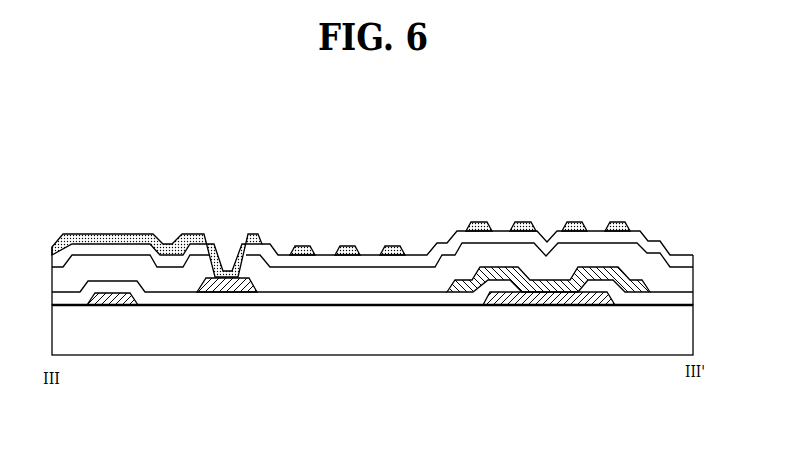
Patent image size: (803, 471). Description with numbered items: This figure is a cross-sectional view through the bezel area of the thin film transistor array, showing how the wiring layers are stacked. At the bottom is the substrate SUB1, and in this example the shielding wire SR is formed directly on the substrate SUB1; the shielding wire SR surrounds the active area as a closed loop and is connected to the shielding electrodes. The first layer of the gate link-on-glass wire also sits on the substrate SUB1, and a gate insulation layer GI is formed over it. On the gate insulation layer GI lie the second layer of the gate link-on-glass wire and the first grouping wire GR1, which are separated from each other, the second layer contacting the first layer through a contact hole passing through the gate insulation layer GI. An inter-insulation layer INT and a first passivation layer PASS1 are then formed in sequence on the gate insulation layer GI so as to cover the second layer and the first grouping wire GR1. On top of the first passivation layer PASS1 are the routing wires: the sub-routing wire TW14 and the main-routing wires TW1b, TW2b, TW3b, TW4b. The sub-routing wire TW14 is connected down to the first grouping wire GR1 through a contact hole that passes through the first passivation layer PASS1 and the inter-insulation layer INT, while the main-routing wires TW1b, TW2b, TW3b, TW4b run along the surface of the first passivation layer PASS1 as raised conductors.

The substrate SUB1 is at (445, 340).
The gate insulation layer GI is at (305, 300).
The shielding wire SR is at (112, 305).
The first grouping wire GR1 is at (227, 297).
The inter-insulation layer INT is at (376, 282).
The first passivation layer PASS1 is at (98, 248).
The 1-4 sub-routing wire TW14 is at (204, 232).
The 1-1 main-routing wire TW1b is at (245, 232).
The 1-2 main-routing wire TW2b is at (298, 247).
The 1-3 main-routing wire TW3b is at (345, 247).
The 1-4 main-routing wire TW4b is at (392, 247).